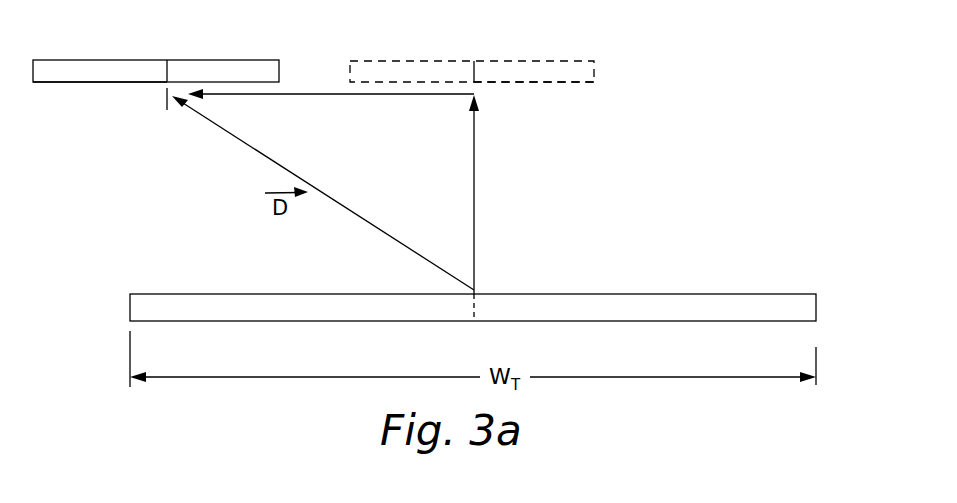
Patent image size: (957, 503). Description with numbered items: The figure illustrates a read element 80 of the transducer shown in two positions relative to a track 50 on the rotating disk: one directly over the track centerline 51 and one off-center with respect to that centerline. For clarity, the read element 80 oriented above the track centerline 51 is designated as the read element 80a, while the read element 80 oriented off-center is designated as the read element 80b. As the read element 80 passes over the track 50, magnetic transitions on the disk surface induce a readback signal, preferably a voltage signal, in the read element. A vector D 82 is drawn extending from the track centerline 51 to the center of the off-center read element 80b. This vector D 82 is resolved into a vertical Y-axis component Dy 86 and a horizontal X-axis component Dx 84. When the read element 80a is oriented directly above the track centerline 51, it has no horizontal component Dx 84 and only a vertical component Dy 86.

The track 50 is at (765, 293).
The track centerline 51 is at (474, 321).
The read element 80 is at (255, 58).
The read element oriented above the track centerline 80a is at (501, 58).
The read element oriented off-center 80b is at (100, 58).
The vector D 82 is at (228, 133).
The horizontal X-axis component Dx 84 is at (395, 94).
The vertical Y-axis component Dy 86 is at (474, 208).